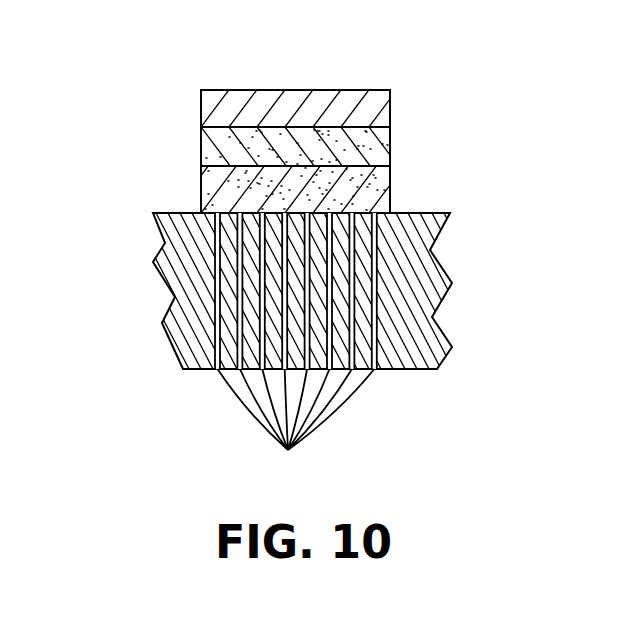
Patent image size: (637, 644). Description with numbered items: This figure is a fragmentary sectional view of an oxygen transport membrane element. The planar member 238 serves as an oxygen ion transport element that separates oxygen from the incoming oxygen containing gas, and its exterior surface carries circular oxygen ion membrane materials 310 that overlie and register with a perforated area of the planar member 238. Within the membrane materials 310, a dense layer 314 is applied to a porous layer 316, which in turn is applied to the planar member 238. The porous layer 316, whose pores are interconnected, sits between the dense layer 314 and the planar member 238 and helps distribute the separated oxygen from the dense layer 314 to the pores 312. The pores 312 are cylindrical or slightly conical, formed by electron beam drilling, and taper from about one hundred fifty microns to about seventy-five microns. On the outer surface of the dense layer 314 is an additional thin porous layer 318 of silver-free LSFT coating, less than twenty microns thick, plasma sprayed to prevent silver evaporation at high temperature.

The oxygen ion membrane materials 310 is at (182, 131).
The thin porous layer 318 is at (231, 103).
The dense layer 314 is at (380, 149).
The porous layer 316 is at (370, 192).
The planar member 238 is at (177, 338).
The pores 312 is at (296, 346).